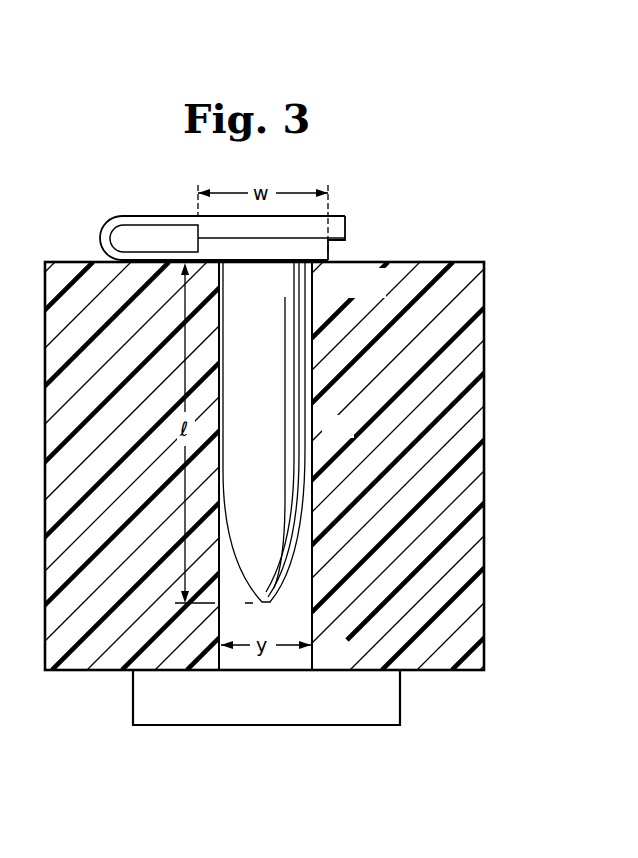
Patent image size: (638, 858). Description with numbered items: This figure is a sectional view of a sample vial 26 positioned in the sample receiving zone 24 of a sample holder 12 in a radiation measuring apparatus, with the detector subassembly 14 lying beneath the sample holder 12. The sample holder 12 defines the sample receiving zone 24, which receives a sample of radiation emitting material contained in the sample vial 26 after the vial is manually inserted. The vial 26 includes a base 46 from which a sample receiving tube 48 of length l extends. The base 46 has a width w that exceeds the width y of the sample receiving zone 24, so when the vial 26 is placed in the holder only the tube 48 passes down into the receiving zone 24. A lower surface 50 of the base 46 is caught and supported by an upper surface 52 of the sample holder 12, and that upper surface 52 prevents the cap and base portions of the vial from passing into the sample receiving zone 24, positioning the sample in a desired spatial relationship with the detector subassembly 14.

The sample holder 12 is at (47, 374).
The detector subassembly 14 is at (401, 707).
The sample receiving zone 24 is at (300, 663).
The sample vial 26 is at (112, 200).
The base 46 is at (331, 252).
The sample receiving tube 48 is at (312, 440).
The lower surface 50 is at (323, 265).
The upper surface 52 is at (84, 261).